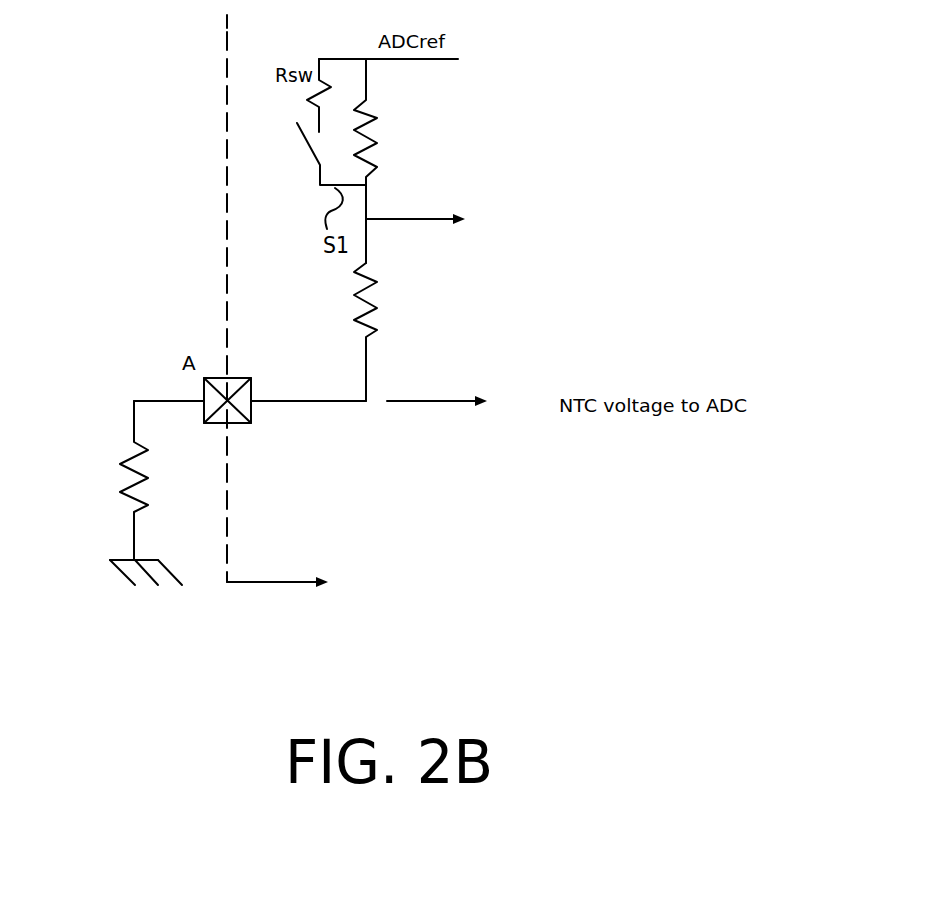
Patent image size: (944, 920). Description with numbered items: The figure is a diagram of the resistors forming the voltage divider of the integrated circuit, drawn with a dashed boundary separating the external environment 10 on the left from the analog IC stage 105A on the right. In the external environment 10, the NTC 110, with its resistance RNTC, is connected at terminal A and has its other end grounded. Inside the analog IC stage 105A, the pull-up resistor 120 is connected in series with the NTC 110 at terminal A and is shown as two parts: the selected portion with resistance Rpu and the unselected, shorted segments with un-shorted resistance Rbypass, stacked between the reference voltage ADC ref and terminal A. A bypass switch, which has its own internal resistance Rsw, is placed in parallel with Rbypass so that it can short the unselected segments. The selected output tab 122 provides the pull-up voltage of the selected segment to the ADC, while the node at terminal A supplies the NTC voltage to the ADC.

The external environment 10 is at (227, 28).
The analog IC stage 105A is at (320, 563).
The NTC 110 is at (128, 458).
The pull-up resistor 120 is at (377, 120).
The output tab 122 is at (403, 218).